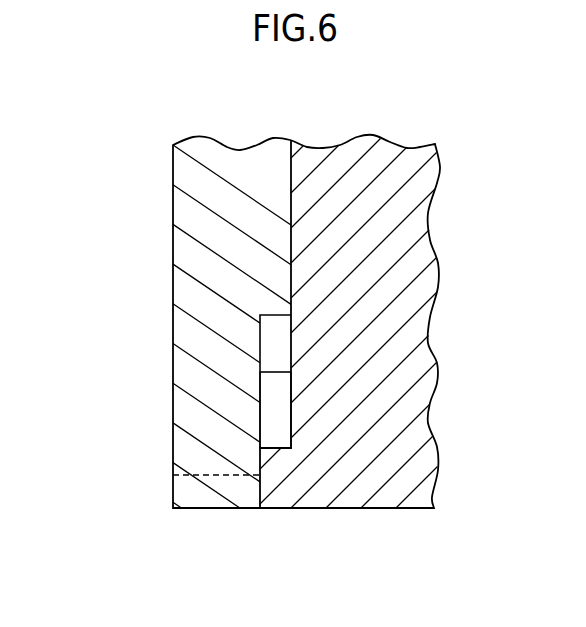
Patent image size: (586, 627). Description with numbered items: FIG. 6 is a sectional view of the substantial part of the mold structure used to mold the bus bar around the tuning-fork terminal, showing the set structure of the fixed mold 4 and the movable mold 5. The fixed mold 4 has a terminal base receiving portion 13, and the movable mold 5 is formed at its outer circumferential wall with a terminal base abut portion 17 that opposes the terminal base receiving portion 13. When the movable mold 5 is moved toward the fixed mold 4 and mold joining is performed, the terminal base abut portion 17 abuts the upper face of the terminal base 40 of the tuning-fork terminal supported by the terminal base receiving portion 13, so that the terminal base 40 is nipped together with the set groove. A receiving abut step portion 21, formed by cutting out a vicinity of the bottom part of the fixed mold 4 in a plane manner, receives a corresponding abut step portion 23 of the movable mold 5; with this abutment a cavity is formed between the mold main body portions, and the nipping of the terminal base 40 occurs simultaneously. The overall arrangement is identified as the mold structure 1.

The solid-state imaging device 1 is at (85, 192).
The fixed mold 4 is at (307, 479).
The movable mold 5 is at (232, 184).
The terminal base receiving portion 13 is at (278, 447).
The terminal base abut portion 17 is at (278, 320).
The receiving abut step portion 21 is at (215, 475).
The abut step portion 23 is at (205, 478).
The terminal base 40 is at (282, 358).